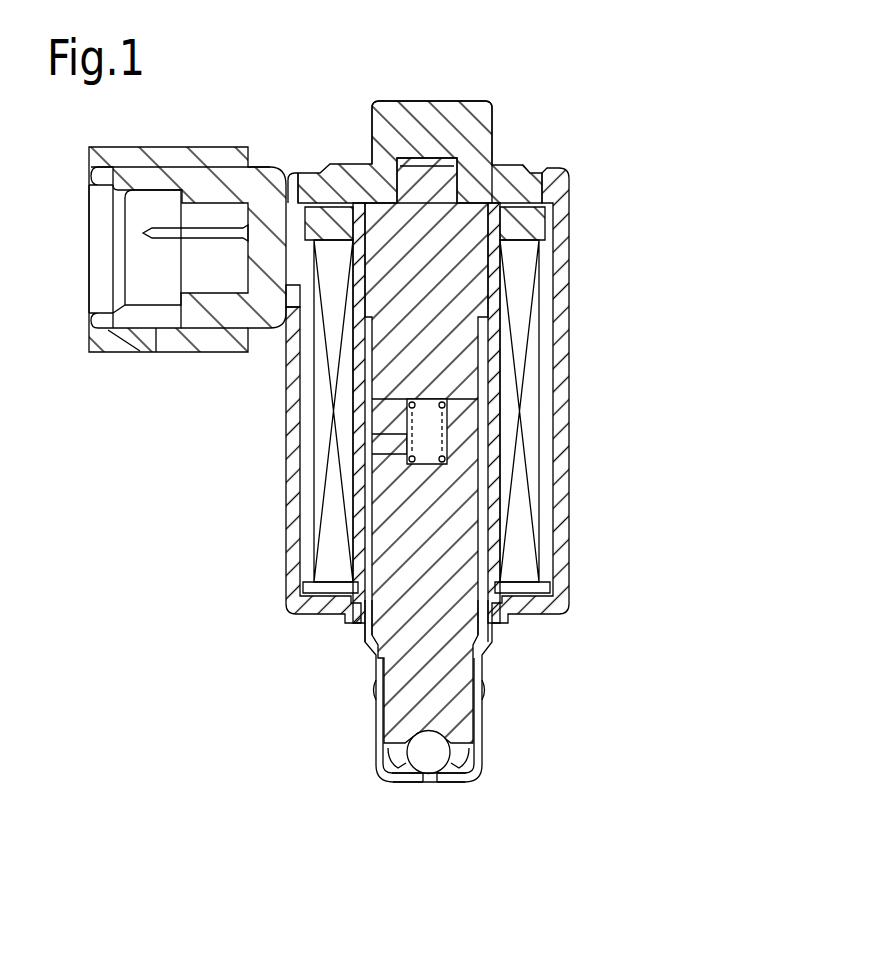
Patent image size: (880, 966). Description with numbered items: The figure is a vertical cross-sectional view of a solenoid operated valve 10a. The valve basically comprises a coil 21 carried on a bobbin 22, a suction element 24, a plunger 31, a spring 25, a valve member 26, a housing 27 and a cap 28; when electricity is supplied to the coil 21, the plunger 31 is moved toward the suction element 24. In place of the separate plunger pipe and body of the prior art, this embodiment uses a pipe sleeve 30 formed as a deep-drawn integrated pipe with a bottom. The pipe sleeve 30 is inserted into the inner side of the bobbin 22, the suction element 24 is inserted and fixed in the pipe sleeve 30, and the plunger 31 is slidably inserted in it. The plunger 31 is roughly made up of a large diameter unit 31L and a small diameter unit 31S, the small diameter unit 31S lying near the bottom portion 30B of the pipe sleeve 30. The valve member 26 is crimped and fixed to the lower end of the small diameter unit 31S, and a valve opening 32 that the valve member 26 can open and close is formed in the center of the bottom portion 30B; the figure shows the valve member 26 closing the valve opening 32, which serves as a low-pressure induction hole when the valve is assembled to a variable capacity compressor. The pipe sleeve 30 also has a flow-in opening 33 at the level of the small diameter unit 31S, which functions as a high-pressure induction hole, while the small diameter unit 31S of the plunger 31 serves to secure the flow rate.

The solenoid operated valve 10a is at (622, 363).
The coil 21 is at (530, 425).
The bobbin 22 is at (507, 522).
The suction element 24 is at (478, 297).
The spring 25 is at (407, 412).
The valve member 26 is at (430, 755).
The housing 27 is at (568, 203).
The cap 28 is at (432, 122).
The pipe sleeve 30 is at (377, 533).
The bottom portion 30B is at (462, 782).
The plunger 31 is at (381, 633).
The large diameter unit 31L is at (398, 588).
The small diameter unit 31S is at (393, 713).
The valve opening 32 is at (430, 782).
The flow-in opening 33 is at (480, 693).